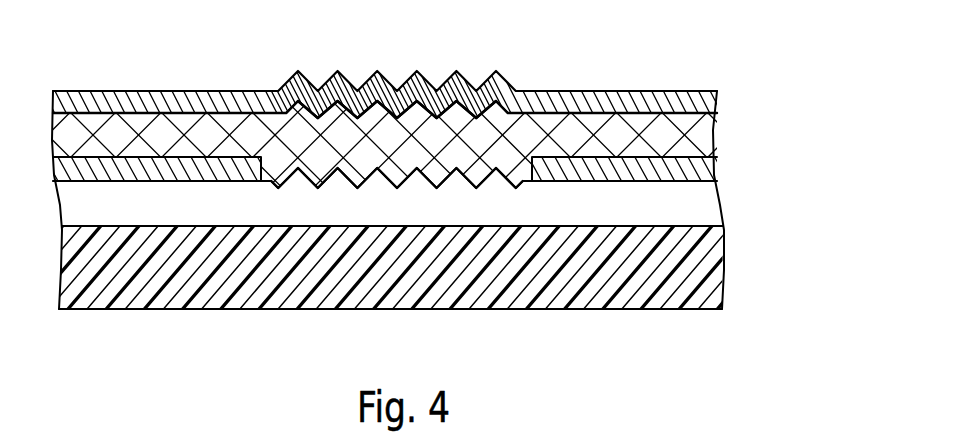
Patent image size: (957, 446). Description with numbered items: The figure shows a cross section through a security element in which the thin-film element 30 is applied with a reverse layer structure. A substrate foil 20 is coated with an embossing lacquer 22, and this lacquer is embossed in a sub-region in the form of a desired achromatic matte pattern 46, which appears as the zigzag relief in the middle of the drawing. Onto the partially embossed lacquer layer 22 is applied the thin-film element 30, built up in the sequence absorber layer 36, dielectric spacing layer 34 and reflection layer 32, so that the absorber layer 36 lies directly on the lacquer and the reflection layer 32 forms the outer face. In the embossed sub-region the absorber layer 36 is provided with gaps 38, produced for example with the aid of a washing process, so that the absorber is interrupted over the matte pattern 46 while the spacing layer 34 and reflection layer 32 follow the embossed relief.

The substrate foil 20 is at (702, 262).
The embossing lacquer 22 is at (705, 205).
The thin-film element 30 is at (421, 126).
The reflection layer 32 is at (702, 103).
The dielectric spacing layer 34 is at (702, 132).
The absorber layer 36 is at (410, 170).
The gaps 38 is at (437, 162).
The achromatic matte pattern 46 is at (292, 189).